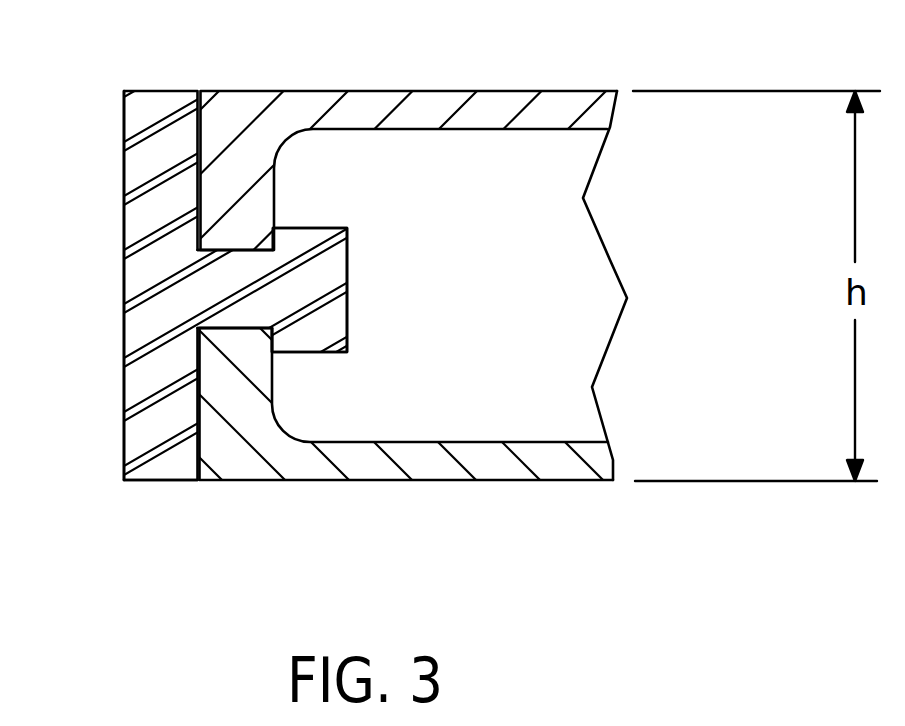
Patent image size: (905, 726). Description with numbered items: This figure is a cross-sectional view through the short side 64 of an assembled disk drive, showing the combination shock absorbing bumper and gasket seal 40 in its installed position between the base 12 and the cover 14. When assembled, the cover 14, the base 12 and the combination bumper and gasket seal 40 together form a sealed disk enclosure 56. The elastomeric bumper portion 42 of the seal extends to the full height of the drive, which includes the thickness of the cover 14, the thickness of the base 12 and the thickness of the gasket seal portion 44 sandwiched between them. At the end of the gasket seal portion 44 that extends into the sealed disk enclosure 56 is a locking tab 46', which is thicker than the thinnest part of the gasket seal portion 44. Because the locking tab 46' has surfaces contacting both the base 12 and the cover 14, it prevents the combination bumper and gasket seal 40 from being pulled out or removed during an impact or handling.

The base 12 is at (548, 463).
The cover 14 is at (577, 107).
The combination shock absorbing bumper and gasket seal 40 is at (150, 402).
The elastomeric bumper portion 42 is at (137, 466).
The gasket seal portion 44 is at (238, 313).
The locking tab 46' is at (365, 290).
The sealed disk enclosure 56 is at (577, 250).
The short side 64 is at (123, 172).